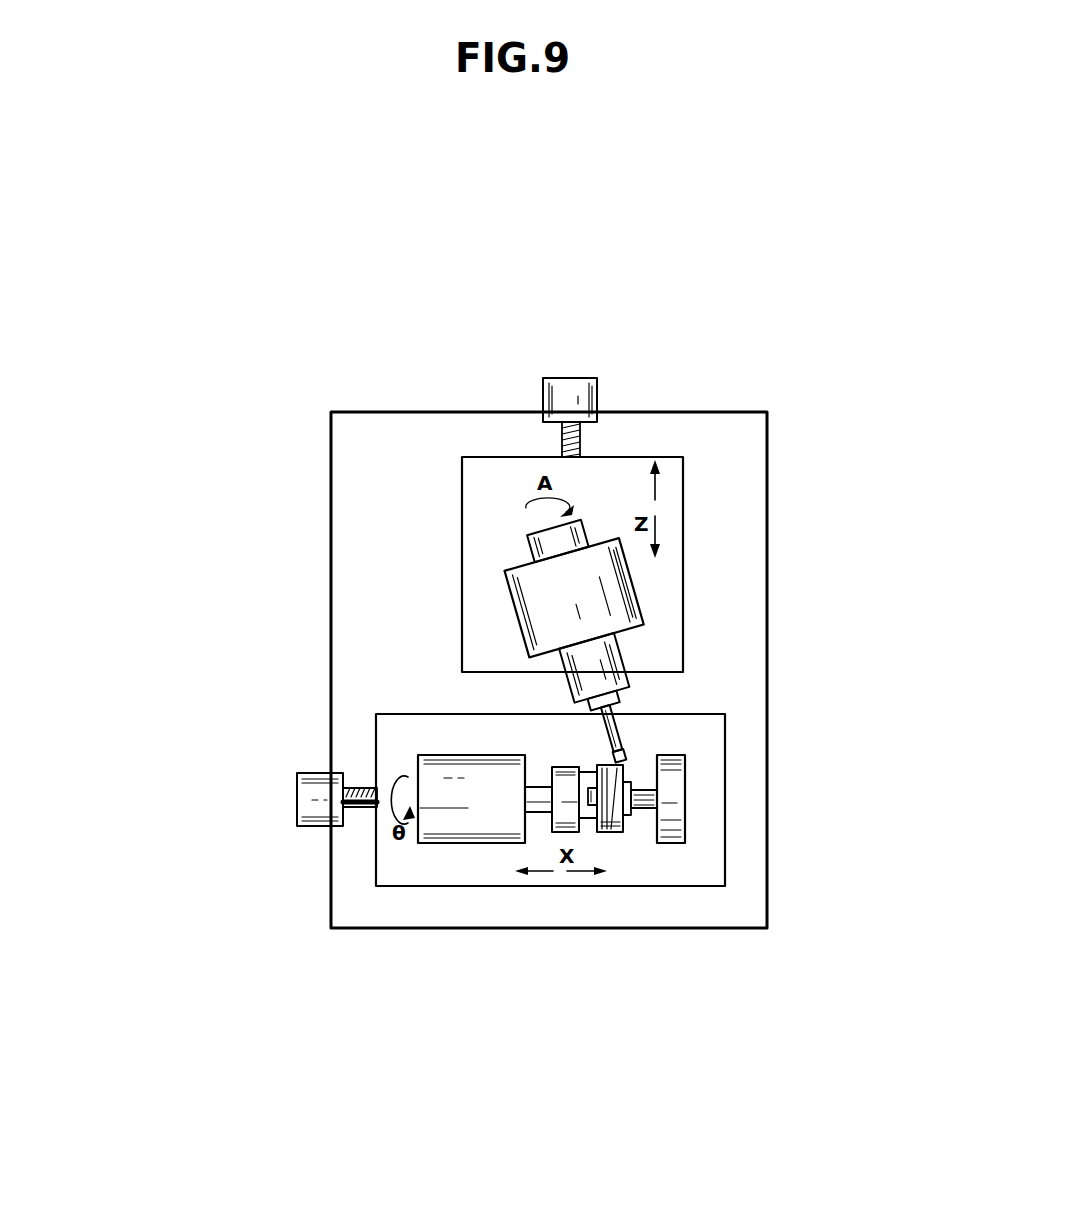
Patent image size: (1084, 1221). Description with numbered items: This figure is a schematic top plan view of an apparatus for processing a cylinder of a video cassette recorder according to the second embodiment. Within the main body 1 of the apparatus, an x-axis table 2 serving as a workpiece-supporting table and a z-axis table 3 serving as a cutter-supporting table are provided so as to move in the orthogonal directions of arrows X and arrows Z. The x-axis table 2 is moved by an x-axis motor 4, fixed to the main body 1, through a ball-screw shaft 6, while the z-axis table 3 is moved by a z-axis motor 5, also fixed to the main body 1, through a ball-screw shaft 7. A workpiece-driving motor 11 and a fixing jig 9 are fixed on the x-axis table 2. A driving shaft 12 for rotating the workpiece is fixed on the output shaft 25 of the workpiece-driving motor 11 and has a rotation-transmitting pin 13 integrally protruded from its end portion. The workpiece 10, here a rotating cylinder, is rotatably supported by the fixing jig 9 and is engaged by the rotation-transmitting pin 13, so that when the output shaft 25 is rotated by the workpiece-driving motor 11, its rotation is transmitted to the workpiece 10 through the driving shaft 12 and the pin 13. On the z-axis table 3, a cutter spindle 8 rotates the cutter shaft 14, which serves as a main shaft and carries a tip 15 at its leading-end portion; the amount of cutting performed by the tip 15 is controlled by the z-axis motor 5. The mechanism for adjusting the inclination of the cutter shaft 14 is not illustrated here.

The main body of apparatus 1 is at (752, 412).
The x-axis table 2 is at (471, 867).
The z-axis table 3 is at (467, 490).
The x-axis motor 4 is at (302, 805).
The z-axis motor 5 is at (559, 380).
The ball-screw shaft 6 is at (360, 810).
The ball-screw shaft 7 is at (585, 442).
The cutter spindle 8 is at (620, 653).
The fixing jig 9 is at (657, 802).
The workpiece 10 is at (612, 828).
The workpiece-driving motor 11 is at (433, 773).
The driving shaft for rotating the workpiece 12 is at (552, 767).
The rotation-transmitting pin 13 is at (583, 767).
The cutter shaft 14 is at (620, 732).
The tip 15 is at (627, 755).
The output shaft 25 is at (540, 816).